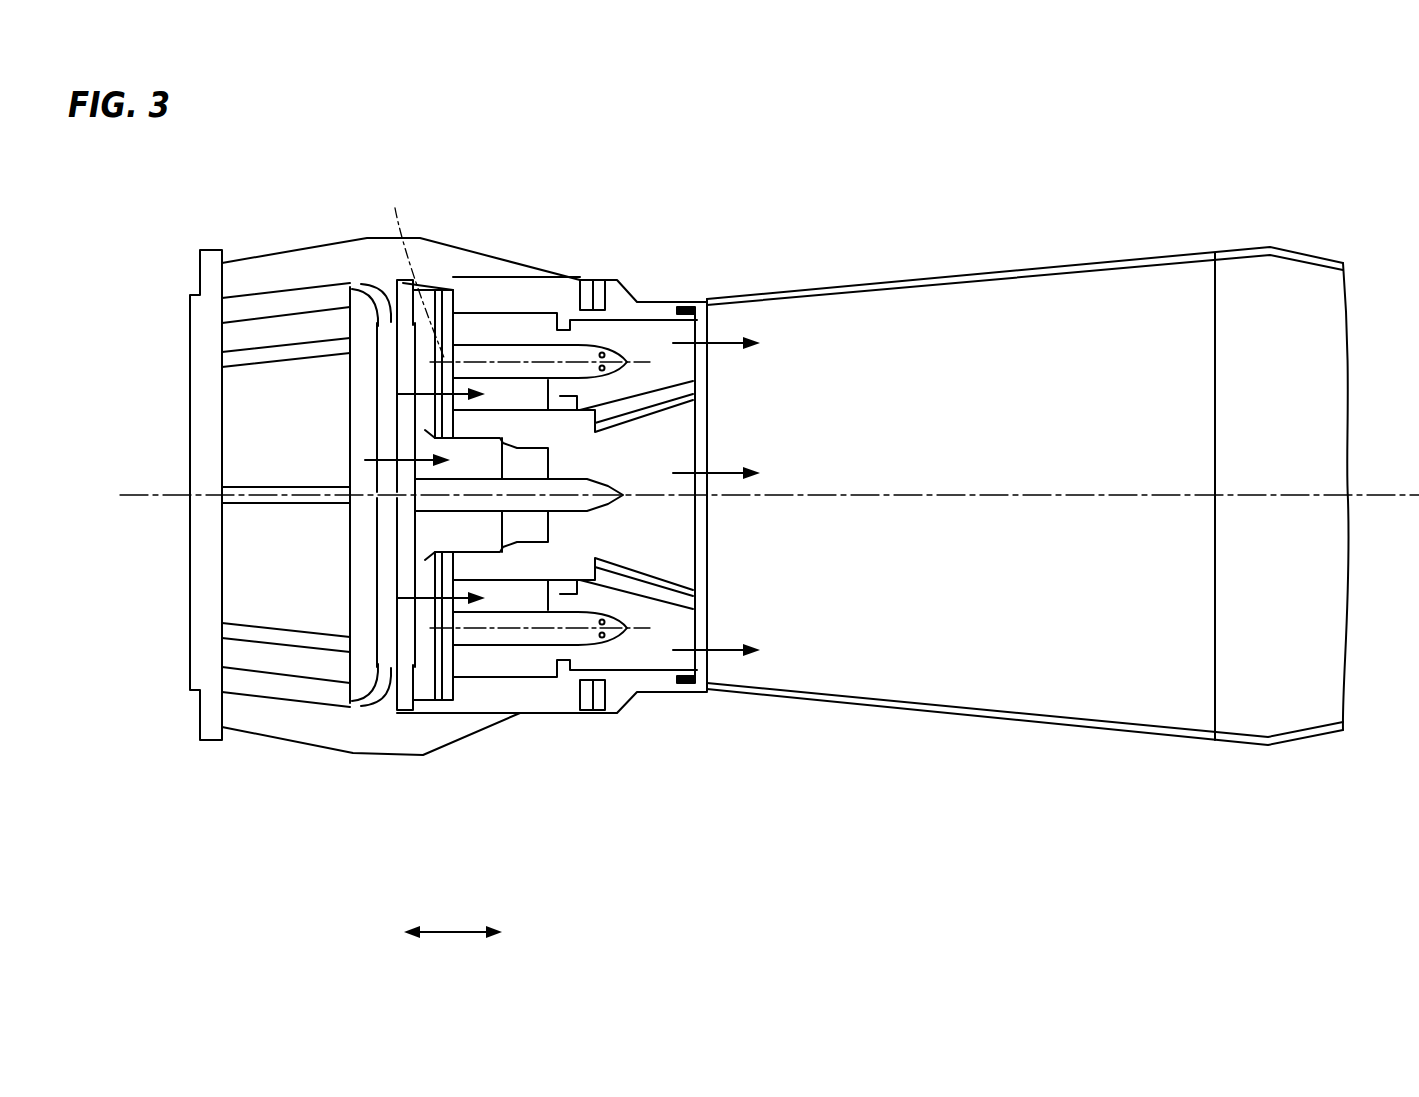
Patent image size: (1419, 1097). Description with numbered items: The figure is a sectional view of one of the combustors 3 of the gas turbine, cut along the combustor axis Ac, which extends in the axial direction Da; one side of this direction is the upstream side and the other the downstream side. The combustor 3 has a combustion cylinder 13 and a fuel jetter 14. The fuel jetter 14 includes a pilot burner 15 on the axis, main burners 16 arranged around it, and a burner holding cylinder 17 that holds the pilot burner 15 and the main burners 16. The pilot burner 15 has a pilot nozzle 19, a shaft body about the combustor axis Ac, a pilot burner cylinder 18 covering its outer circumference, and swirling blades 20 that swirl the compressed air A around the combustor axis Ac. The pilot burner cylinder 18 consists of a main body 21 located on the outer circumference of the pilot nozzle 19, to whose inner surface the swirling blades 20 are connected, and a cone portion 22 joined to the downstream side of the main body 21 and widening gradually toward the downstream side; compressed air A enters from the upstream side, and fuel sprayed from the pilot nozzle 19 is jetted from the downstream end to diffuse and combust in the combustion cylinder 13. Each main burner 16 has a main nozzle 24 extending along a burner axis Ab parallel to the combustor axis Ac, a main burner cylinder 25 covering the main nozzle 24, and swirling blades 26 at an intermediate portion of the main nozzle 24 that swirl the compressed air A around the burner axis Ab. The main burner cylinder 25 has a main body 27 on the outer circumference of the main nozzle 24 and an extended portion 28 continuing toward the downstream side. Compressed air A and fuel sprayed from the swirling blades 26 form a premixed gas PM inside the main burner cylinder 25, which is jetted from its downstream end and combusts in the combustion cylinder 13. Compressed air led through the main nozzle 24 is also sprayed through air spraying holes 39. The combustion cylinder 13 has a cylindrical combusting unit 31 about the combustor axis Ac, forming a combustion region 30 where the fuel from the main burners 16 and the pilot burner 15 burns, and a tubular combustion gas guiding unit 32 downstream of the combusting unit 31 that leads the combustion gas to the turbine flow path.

The combustor 3 is at (1248, 768).
The combustion cylinder 13 is at (1023, 450).
The fuel jetter 14 is at (262, 226).
The pilot burner 15 is at (563, 685).
The main burner 16 is at (614, 493).
The burner holding cylinder 17 is at (423, 710).
The pilot burner cylinder 18 is at (543, 560).
The pilot nozzle 19 is at (556, 505).
The swirling blades 20 is at (567, 537).
The main body 21 is at (510, 548).
The cone portion 22 is at (640, 570).
The main nozzle 24 is at (530, 352).
The main burner cylinder 25 is at (510, 300).
The swirling blades 26 is at (570, 325).
The main body 27 is at (475, 290).
The extended portion 28 is at (662, 316).
The combustion region 30 is at (1033, 293).
The combusting unit 31 is at (965, 268).
The combustion gas guiding unit 32 is at (1303, 253).
The air spraying holes 39 is at (602, 352).
The compressed air A is at (390, 458).
The burner axis Ab is at (412, 268).
The combustor axis Ac is at (152, 494).
The premixed gas PM is at (727, 337).
The axial direction Da is at (465, 922).